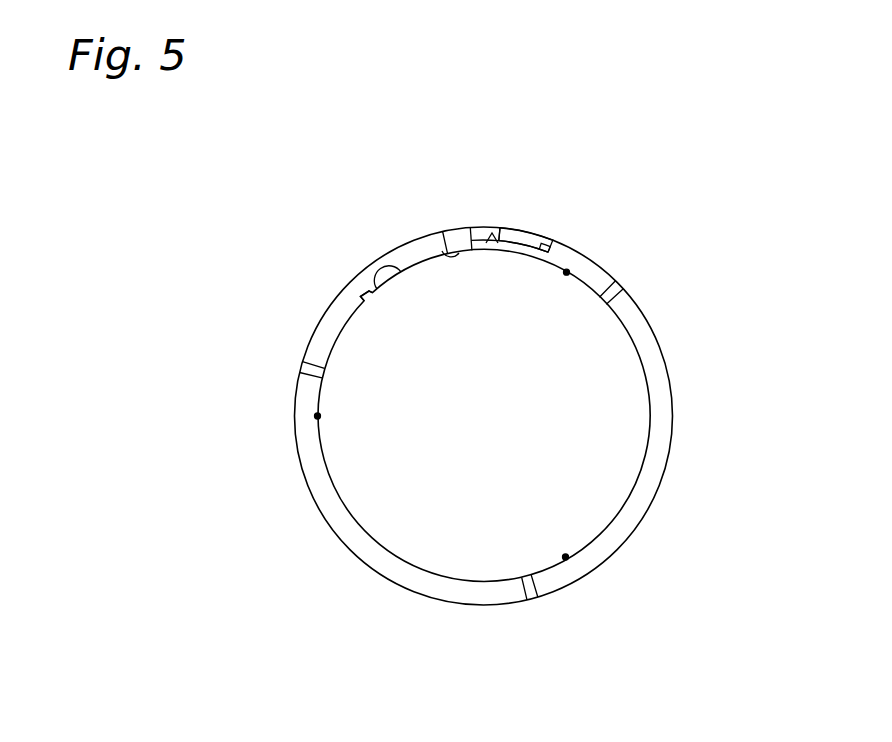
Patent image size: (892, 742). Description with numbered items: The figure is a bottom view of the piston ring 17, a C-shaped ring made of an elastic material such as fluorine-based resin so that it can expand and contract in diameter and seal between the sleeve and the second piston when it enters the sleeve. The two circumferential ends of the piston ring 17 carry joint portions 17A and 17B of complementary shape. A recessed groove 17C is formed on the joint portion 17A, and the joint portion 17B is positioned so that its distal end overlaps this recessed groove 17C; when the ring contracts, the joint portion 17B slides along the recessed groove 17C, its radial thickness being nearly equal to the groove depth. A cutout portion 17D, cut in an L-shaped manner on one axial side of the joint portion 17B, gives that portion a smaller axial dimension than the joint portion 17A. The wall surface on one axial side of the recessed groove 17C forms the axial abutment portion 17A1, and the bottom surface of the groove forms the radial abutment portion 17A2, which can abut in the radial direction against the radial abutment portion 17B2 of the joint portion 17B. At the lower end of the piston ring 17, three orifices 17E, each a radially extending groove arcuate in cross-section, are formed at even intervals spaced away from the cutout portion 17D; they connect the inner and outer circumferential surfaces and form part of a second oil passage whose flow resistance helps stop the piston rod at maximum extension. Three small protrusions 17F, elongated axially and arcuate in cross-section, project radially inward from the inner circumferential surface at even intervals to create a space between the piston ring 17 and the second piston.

The piston ring 17 is at (370, 258).
The joint portion 17A is at (522, 229).
The axial abutment portion 17A1 is at (519, 230).
The radial abutment portion 17A2 is at (492, 244).
The joint portion 17B is at (488, 228).
The radial abutment portion 17B2 is at (443, 230).
The recessed groove 17C is at (525, 243).
The cutout portion 17D is at (378, 279).
The orifices 17E is at (620, 293).
The small protrusions 17F is at (568, 271).